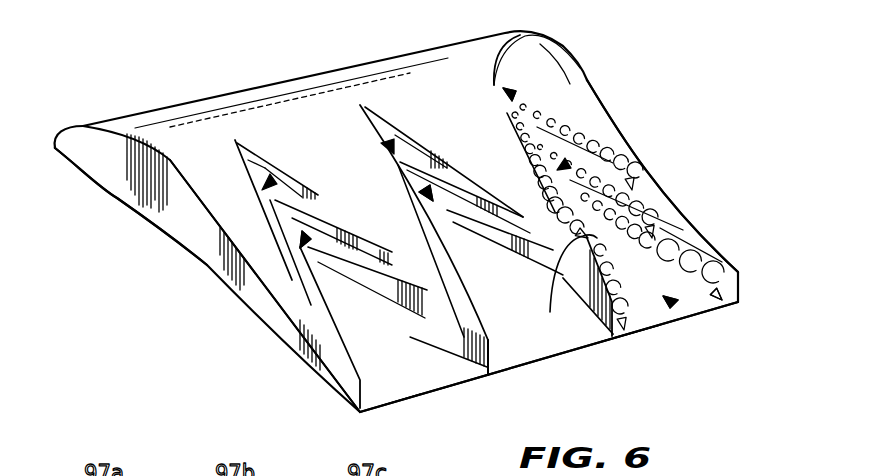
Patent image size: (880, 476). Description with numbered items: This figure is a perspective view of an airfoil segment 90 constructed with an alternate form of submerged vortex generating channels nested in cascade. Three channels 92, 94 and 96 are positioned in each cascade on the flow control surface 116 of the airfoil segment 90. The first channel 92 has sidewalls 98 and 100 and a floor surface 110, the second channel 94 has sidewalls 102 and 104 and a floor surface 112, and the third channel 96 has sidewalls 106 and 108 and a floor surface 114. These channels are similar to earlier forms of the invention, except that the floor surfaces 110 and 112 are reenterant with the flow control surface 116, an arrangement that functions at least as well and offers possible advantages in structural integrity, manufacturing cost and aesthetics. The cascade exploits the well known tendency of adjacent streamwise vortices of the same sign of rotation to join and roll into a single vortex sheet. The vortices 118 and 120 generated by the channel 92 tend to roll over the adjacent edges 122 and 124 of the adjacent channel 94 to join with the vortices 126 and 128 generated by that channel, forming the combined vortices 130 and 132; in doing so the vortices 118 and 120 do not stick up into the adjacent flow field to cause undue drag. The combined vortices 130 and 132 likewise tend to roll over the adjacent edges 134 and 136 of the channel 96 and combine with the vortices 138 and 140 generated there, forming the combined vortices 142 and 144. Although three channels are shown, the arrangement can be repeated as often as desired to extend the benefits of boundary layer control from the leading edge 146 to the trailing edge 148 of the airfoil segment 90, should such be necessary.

The airfoil segment 90 is at (530, 62).
The channel 92 is at (524, 18).
The channel 94 is at (422, 193).
The channel 96 is at (390, 377).
The sidewall 98 is at (252, 208).
The sidewall 100 is at (293, 184).
The sidewall 102 is at (303, 262).
The sidewall 104 is at (340, 235).
The sidewall 106 is at (352, 352).
The sidewall 108 is at (462, 357).
The floor surface 110 is at (247, 174).
The floor surface 112 is at (305, 250).
The floor surface 114 is at (337, 335).
The flow control surface 116 is at (552, 76).
The vortex 118 is at (395, 167).
The vortex 120 is at (555, 118).
The edge 122 is at (430, 242).
The edge 124 is at (445, 185).
The vortex 126 is at (432, 210).
The vortex 128 is at (638, 164).
The combined vortex 130 is at (560, 297).
The combined vortex 132 is at (650, 232).
The edge 134 is at (587, 322).
The edge 136 is at (703, 233).
The vortex 138 is at (645, 212).
The vortex 140 is at (632, 215).
The combined vortex 142 is at (640, 327).
The combined vortex 144 is at (704, 302).
The leading edge 146 is at (412, 55).
The trailing edge 148 is at (402, 396).